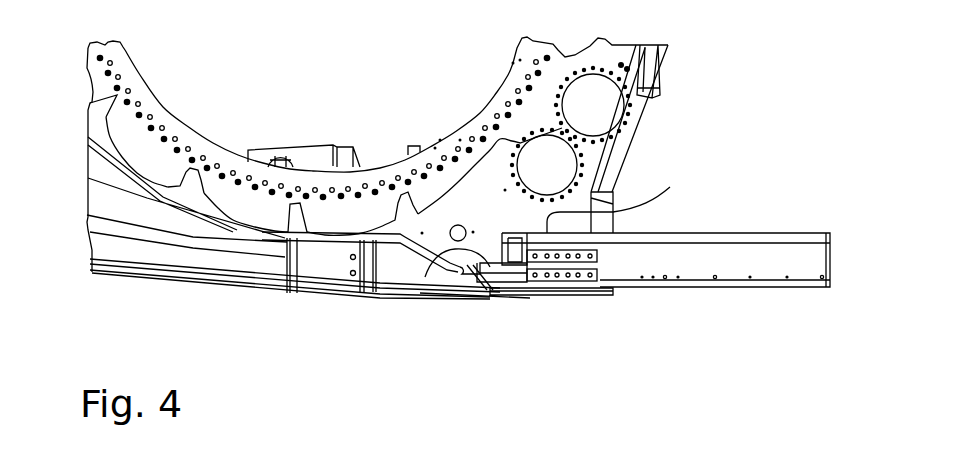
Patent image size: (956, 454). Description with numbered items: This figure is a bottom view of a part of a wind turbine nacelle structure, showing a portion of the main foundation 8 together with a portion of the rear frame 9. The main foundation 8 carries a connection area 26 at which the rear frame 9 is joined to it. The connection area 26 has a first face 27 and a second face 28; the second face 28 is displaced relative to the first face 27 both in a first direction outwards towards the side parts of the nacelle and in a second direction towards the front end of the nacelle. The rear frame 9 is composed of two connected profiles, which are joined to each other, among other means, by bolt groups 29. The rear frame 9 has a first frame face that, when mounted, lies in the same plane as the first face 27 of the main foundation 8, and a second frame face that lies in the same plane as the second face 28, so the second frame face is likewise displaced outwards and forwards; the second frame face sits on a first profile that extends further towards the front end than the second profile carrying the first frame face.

The main foundation 8 is at (152, 240).
The rear frame 9 is at (738, 253).
The connection area 26 is at (519, 303).
The first face 27 is at (623, 139).
The second face 28 is at (425, 277).
The bolt groups 29 is at (597, 250).